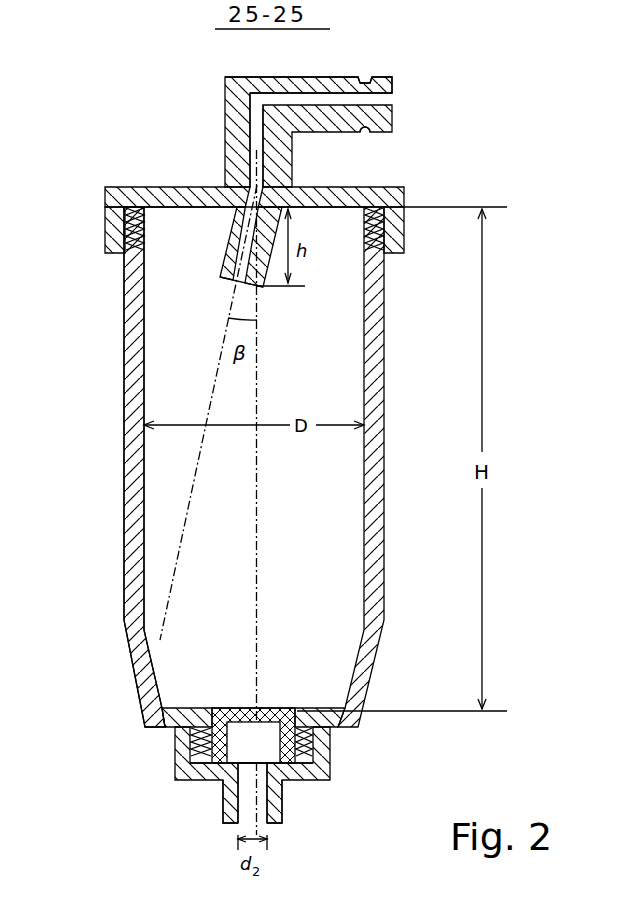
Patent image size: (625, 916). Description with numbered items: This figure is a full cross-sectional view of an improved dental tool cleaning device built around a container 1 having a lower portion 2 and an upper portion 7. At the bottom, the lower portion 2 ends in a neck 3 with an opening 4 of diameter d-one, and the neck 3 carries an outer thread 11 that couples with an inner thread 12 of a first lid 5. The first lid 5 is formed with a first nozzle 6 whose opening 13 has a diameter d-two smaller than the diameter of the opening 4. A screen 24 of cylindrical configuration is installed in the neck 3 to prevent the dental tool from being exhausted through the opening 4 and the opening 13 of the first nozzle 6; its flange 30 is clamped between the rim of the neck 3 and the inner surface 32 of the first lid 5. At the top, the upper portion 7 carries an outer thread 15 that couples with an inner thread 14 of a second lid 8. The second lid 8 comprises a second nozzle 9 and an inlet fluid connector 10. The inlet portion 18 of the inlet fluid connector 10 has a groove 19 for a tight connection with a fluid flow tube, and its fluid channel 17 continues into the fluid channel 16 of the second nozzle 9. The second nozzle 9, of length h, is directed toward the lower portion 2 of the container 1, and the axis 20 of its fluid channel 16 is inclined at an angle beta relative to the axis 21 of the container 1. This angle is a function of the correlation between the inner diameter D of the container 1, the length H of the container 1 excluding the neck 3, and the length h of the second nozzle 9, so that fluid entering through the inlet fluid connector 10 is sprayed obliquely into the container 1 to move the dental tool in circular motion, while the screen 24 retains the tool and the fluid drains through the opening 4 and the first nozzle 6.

The container 1 is at (373, 353).
The lower portion 2 is at (120, 592).
The neck 3 is at (203, 723).
The opening 4 is at (260, 733).
The first lid 5 is at (323, 765).
The first nozzle 6 is at (228, 803).
The upper portion 7 is at (117, 312).
The second lid 8 is at (312, 190).
The second nozzle 9 is at (233, 240).
The inlet fluid connector 10 is at (304, 82).
The outer thread 11 is at (180, 740).
The inner thread 12 is at (332, 738).
The opening 13 is at (258, 810).
The inner thread 14 is at (403, 222).
The outer thread 15 is at (132, 226).
The fluid channel 16 is at (237, 283).
The fluid channel 17 is at (257, 128).
The inlet portion 18 is at (398, 80).
The groove 19 is at (363, 129).
The axis 20 is at (208, 412).
The axis 21 is at (258, 360).
The screen 24 is at (263, 717).
The flange 30 is at (207, 767).
The inner surface 32 is at (253, 742).